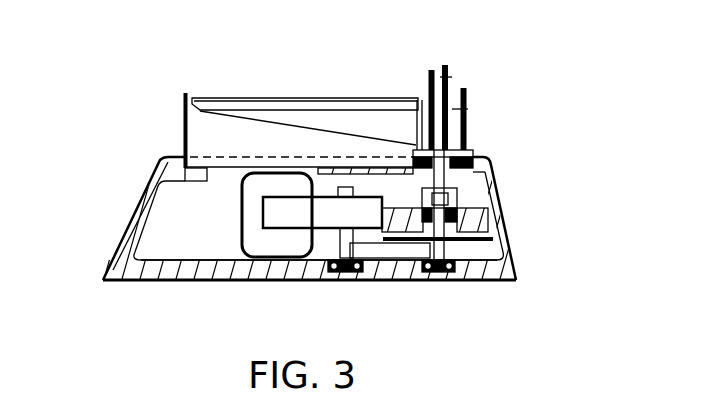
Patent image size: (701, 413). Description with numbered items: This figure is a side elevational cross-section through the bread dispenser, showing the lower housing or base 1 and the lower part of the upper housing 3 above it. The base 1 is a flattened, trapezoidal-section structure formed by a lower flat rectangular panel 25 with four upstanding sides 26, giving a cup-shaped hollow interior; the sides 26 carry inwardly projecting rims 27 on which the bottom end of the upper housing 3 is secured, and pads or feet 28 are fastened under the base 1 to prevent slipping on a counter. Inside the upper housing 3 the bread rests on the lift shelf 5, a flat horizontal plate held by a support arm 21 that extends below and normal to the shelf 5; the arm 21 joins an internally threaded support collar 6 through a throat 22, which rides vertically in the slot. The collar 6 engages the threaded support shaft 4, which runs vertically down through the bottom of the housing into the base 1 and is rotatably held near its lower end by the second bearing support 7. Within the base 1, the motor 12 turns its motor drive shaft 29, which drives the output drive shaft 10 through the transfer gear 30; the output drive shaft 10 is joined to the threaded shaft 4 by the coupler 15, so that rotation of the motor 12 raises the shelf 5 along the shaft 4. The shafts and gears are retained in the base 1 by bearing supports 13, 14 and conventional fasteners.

The lower housing or base 1 is at (130, 218).
The upper housing 3 is at (183, 118).
The threaded support shaft 4 is at (447, 78).
The lift shelf 5 is at (325, 100).
The support collar 6 is at (465, 110).
The second bearing support 7 is at (475, 150).
The output drive shaft 10 is at (440, 280).
The motor 12 is at (288, 215).
The bearing support 13 is at (455, 276).
The bearing support 14 is at (457, 218).
The coupler 15 is at (457, 196).
The support arm 21 is at (300, 115).
The throat 22 is at (417, 100).
The lower flat rectangular panel 25 is at (103, 273).
The upstanding sides 26 is at (140, 207).
The inwardly projecting rims 27 is at (200, 182).
The pad or feet 28 is at (158, 282).
The motor drive shaft 29 is at (332, 250).
The transfer gear 30 is at (375, 280).